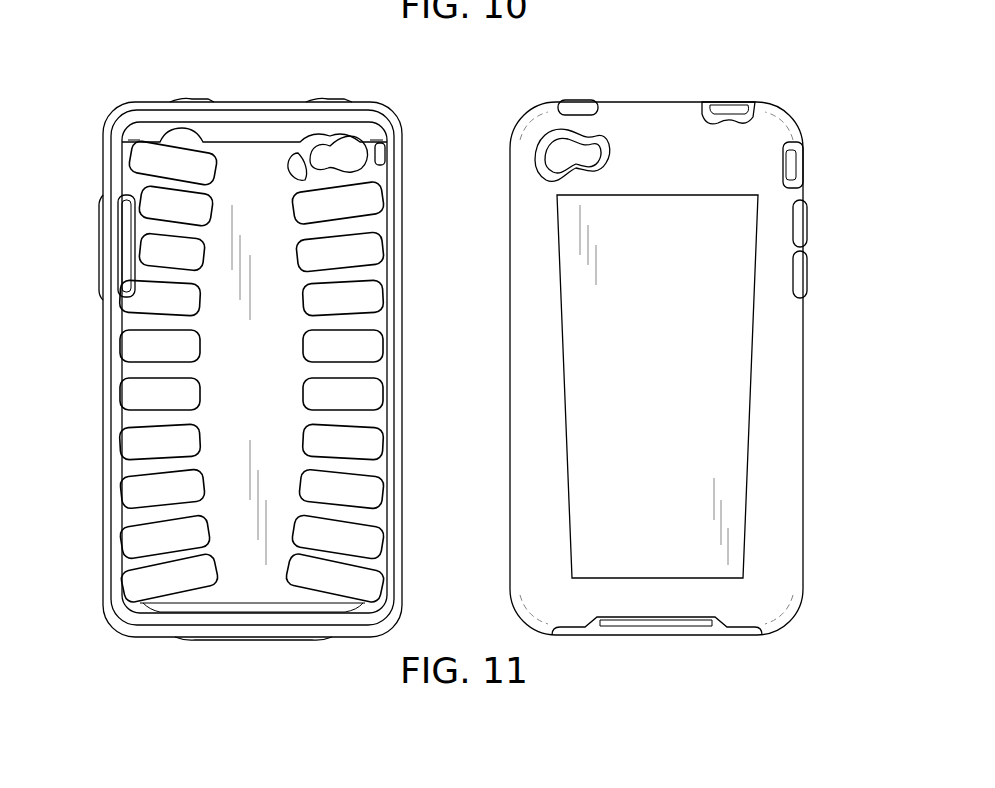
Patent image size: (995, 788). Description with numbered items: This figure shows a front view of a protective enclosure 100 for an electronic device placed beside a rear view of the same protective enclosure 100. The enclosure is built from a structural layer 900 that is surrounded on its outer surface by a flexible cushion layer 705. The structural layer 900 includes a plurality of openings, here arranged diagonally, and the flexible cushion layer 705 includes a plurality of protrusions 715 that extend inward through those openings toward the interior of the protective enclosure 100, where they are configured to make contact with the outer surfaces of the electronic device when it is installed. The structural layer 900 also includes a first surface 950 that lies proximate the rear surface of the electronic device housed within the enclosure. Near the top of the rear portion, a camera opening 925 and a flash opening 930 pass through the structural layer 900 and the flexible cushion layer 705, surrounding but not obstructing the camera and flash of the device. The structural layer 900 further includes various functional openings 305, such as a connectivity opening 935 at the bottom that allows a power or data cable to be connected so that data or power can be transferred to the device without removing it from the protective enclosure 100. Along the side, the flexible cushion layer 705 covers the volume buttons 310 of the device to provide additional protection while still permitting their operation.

The protective enclosure 100 is at (128, 66).
The functional openings 305 is at (735, 118).
The volume buttons 310 is at (104, 215).
The flexible cushion layer 705 is at (108, 525).
The protrusions 715 is at (162, 350).
The structural layer 900 is at (243, 163).
The camera opening 925 is at (353, 158).
The flash opening 930 is at (317, 157).
The connectivity opening 935 is at (687, 622).
The first surface 950 is at (258, 350).